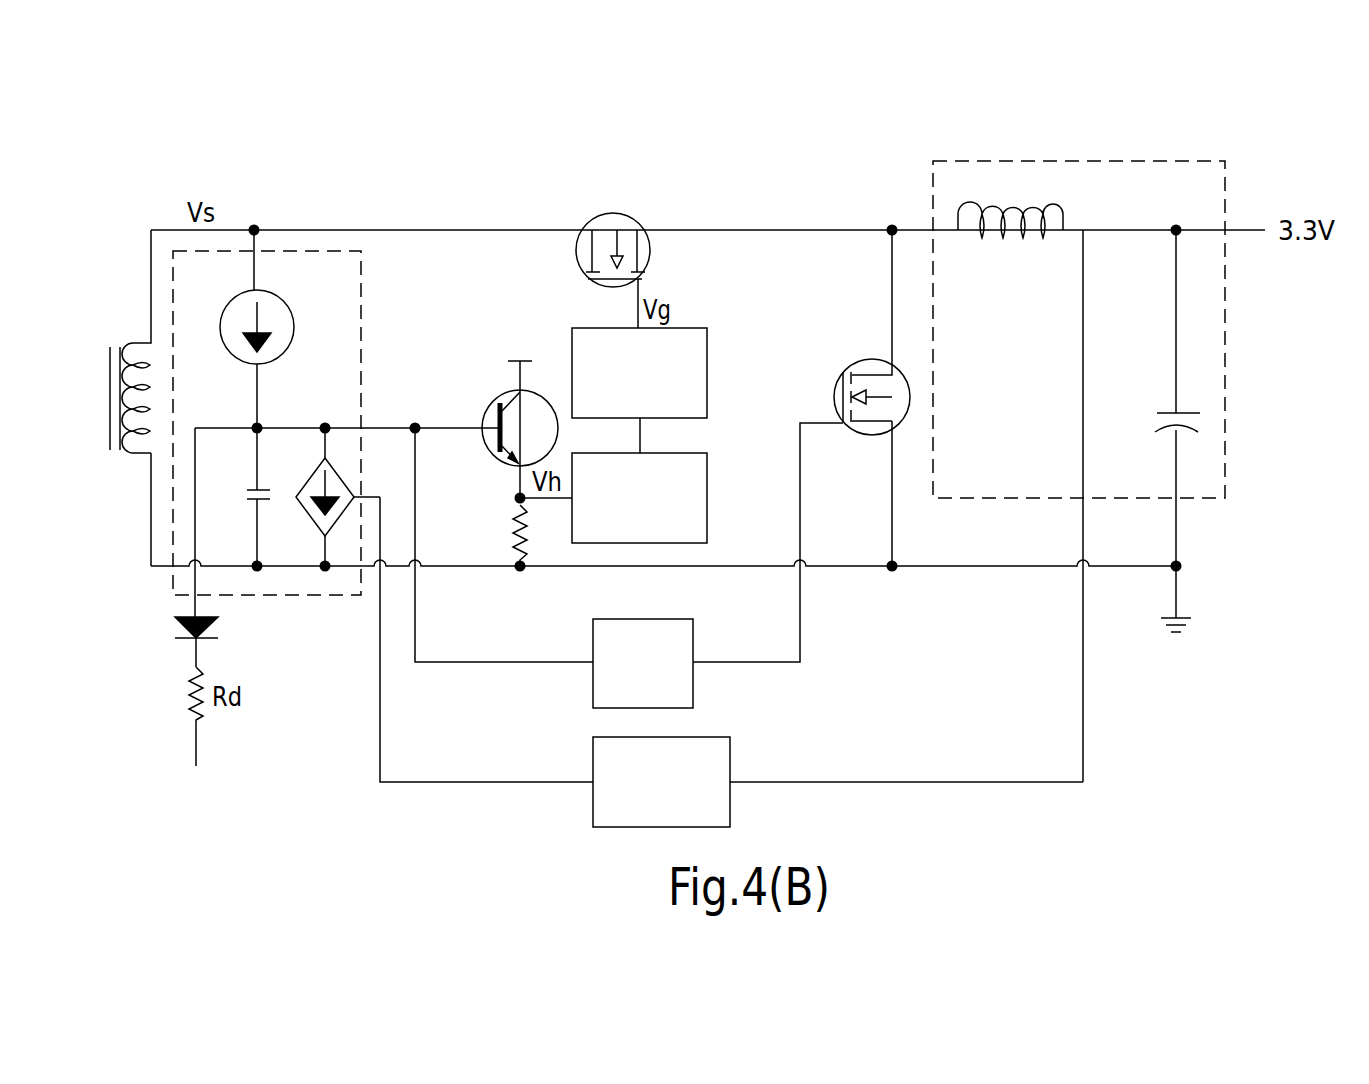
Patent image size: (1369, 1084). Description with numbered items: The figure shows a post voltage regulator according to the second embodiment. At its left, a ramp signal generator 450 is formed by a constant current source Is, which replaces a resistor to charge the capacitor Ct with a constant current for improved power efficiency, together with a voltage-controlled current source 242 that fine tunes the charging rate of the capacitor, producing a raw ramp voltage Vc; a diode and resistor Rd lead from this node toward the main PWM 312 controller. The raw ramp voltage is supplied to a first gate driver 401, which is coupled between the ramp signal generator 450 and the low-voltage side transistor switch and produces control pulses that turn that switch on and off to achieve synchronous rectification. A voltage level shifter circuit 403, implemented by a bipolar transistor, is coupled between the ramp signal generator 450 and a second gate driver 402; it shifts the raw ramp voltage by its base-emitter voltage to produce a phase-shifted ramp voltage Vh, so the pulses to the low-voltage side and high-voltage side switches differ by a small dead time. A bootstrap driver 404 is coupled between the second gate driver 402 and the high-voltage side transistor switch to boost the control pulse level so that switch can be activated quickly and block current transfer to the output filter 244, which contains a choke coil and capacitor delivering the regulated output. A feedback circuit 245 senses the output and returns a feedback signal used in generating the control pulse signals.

The ramp signal generator 450 is at (321, 412).
The voltage-controlled current source 242 is at (312, 473).
The voltage level shifter circuit 403 is at (513, 400).
The bootstrap driver 404 is at (707, 368).
The second gate driver 402 is at (707, 493).
The first gate driver 401 is at (685, 668).
The feedback circuit 245 is at (720, 800).
The output filter 244 is at (1048, 160).
The main PWM controller 312 is at (197, 784).